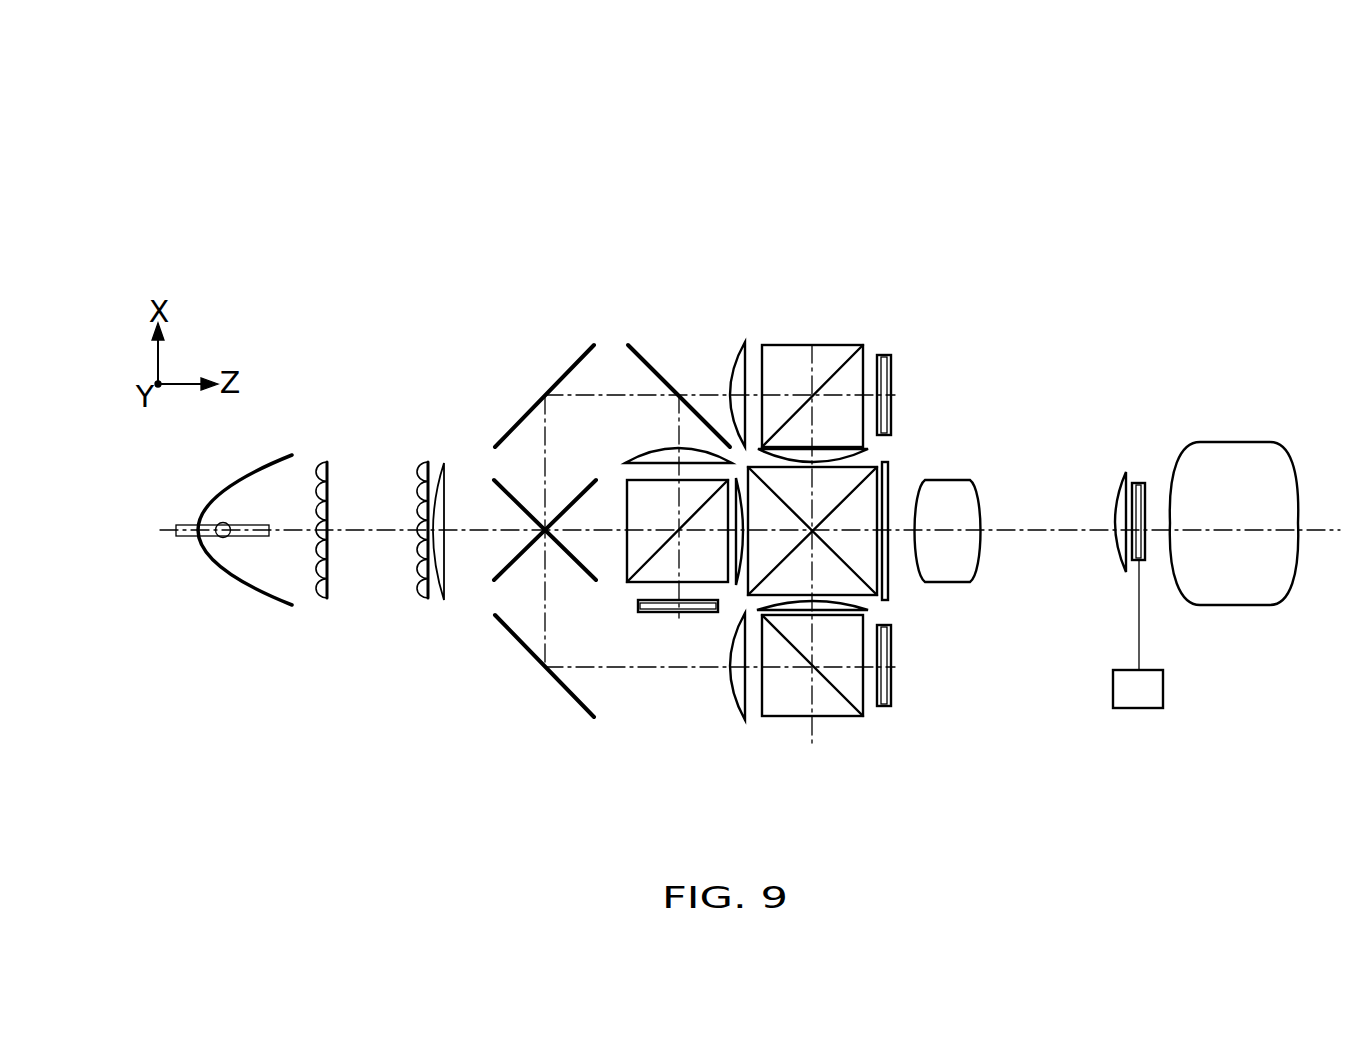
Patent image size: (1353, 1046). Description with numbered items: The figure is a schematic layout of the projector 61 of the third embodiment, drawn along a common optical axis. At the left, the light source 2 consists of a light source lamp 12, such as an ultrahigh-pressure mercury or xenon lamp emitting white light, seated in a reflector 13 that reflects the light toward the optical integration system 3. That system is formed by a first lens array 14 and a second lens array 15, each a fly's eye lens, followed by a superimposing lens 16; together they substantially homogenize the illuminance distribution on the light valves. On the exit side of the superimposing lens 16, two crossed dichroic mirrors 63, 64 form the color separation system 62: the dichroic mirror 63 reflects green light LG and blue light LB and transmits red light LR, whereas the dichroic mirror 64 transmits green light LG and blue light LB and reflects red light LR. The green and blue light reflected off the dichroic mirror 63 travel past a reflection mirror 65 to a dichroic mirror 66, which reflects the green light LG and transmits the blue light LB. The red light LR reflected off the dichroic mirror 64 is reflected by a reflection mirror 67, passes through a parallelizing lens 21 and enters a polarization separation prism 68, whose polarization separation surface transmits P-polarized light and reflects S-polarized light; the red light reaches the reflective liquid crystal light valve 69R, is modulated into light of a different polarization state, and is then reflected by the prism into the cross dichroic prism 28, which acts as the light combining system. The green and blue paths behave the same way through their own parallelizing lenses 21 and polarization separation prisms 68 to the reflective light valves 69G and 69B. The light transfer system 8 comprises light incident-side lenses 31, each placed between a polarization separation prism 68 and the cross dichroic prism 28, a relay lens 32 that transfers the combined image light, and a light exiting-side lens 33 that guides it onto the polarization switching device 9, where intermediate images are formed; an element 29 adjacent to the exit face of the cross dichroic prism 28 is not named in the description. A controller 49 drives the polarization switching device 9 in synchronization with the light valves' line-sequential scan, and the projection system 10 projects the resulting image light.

The light source 2 is at (277, 437).
The optical integration system 3 is at (372, 437).
The color separation system 62 is at (482, 470).
The projector 61 is at (855, 236).
The light transfer system 8 is at (1050, 433).
The light source lamp 12 is at (223, 538).
The reflector 13 is at (248, 602).
The first lens array 14 is at (326, 599).
The second lens array 15 is at (425, 599).
The superimposing lens 16 is at (441, 601).
The dichroic mirror 63 is at (526, 553).
The dichroic mirror 64 is at (518, 503).
The reflection mirror 65 is at (558, 380).
The dichroic mirror 66 is at (648, 362).
The reflection mirror 67 is at (562, 688).
The parallelizing lens 21 is at (740, 343).
The polarization separation prism 68 is at (813, 344).
The reflective liquid crystal light valve 69B is at (885, 355).
The reflective liquid crystal light valve 69G is at (651, 613).
The reflective liquid crystal light valve 69R is at (884, 708).
The light incident-side lenses 31 is at (870, 450).
The cross dichroic prism 28 is at (868, 567).
The plate 29 is at (890, 472).
The relay lens 32 is at (968, 492).
The light exiting-side lens 33 is at (1118, 477).
The polarization switching device 9 is at (1138, 483).
The controller 49 is at (1133, 700).
The projection system 10 is at (1229, 450).
The blue light LB is at (700, 393).
The green light LG is at (680, 435).
The red light LR is at (697, 668).